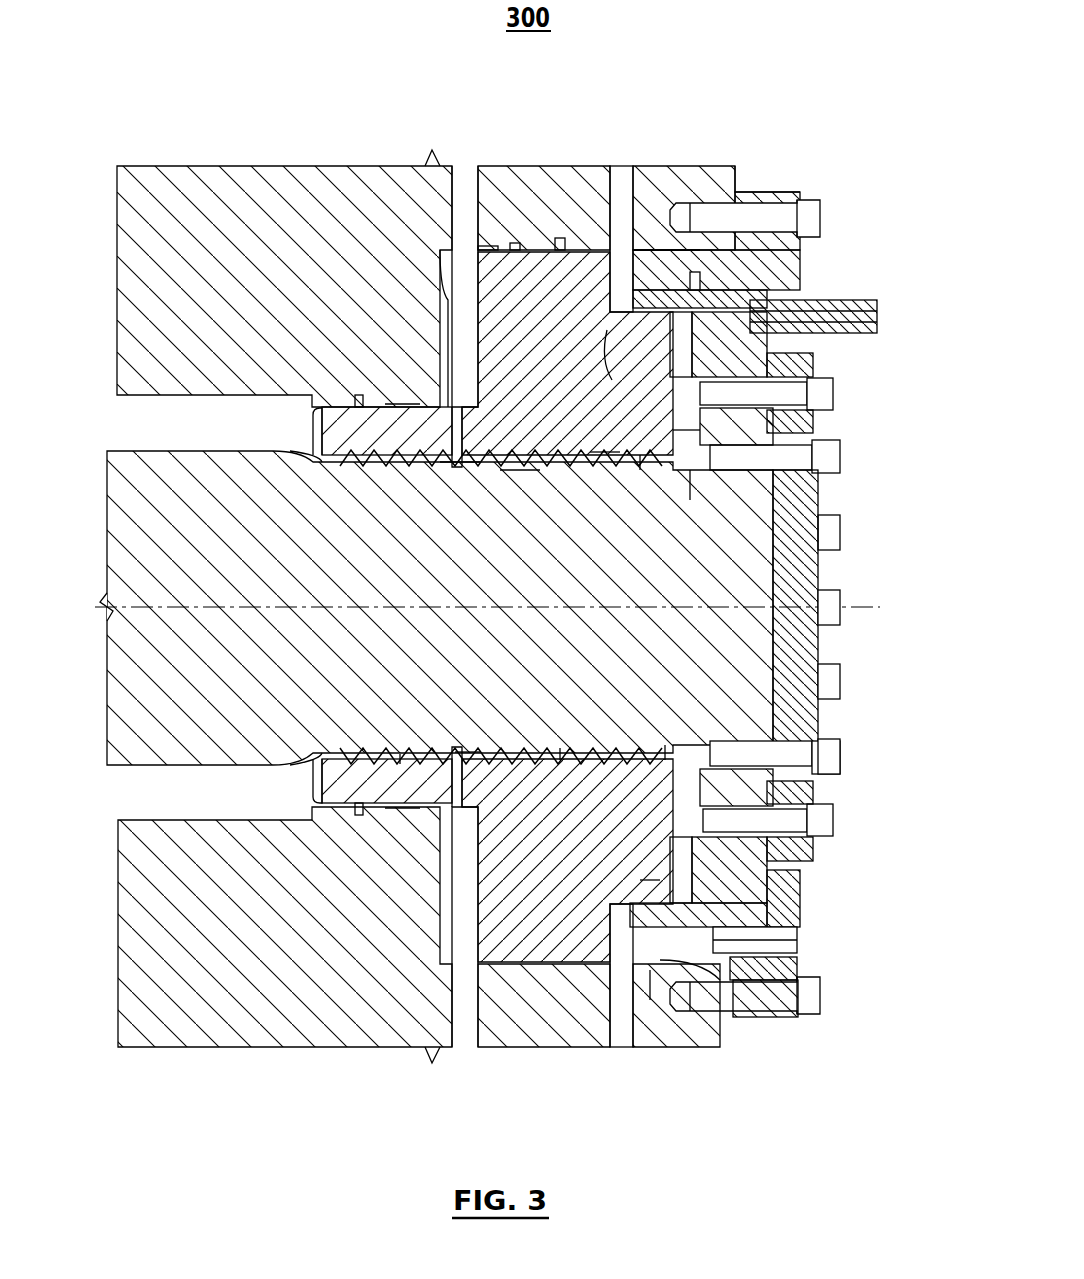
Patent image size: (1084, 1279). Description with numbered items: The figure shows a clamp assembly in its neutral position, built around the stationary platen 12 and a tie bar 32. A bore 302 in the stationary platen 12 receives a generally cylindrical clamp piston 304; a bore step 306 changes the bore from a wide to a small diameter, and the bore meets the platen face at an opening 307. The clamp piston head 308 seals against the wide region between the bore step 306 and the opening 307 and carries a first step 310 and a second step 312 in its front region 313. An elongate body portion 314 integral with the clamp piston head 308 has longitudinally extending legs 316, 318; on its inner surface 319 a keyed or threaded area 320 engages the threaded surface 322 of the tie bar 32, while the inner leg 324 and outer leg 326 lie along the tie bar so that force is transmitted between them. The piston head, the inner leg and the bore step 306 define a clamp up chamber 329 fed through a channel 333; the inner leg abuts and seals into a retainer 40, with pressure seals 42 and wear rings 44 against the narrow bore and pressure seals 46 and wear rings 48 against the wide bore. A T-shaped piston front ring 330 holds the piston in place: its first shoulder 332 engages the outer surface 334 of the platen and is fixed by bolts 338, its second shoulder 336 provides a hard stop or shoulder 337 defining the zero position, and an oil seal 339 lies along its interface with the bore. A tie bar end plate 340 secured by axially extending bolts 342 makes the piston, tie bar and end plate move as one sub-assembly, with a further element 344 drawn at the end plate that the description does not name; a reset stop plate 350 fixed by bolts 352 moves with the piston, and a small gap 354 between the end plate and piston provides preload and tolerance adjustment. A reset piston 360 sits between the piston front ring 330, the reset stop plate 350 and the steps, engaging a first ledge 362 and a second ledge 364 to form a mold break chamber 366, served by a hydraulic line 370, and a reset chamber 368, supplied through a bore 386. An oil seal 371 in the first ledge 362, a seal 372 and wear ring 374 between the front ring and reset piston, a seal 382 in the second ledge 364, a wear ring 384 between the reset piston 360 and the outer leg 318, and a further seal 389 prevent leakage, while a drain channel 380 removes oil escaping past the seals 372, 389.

The stationary platen 12 is at (290, 200).
The tie bar 32 is at (100, 548).
The retainer 40 is at (300, 460).
The pressure seals 42 is at (318, 408).
The wear rings 44 is at (415, 462).
The pressure seals 46 is at (515, 243).
The wear rings 48 is at (482, 246).
The bore 302 is at (320, 805).
The clamp piston 304 is at (470, 950).
The bore step 306 is at (432, 250).
The opening 307 is at (740, 1017).
The clamp piston head 308 is at (560, 965).
The first step 310 is at (560, 236).
The second step 312 is at (745, 215).
The front region 313 is at (645, 878).
The elongate body portion 314 is at (520, 470).
The inner leg 316 is at (460, 466).
The outer leg 318 is at (700, 500).
The inner surface 319 is at (405, 750).
The keyed (or threaded) area 320 is at (530, 750).
The keyed (or threaded) surface 322 is at (570, 750).
The inner leg 324 is at (330, 755).
The outer leg 326 is at (720, 770).
The clamp up chamber 329 is at (465, 760).
The piston front ring 330 is at (790, 265).
The first shoulder 332 is at (775, 215).
The channel 333 is at (465, 180).
The outer surface 334 is at (740, 200).
The second shoulder 336 is at (790, 305).
The hard stop (shoulder) 337 is at (790, 298).
The bolts 338 is at (815, 218).
The oil seal 339 is at (797, 968).
The tie bar end plate 340 is at (808, 572).
The bolts 342 is at (830, 532).
The bolt head 344 is at (830, 460).
The reset stop plate 350 is at (828, 390).
The bolts 352 is at (825, 455).
The gap 354 is at (830, 822).
The reset piston 360 is at (640, 460).
The first ledge 362 is at (680, 860).
The second ledge 364 is at (600, 455).
The mold break chamber 366 is at (622, 965).
The reset chamber 368 is at (680, 375).
The hydraulic line 370 is at (620, 190).
The oil seal 371 is at (607, 357).
The seal 372 is at (690, 1000).
The wear ring 374 is at (655, 250).
The drain channel 380 is at (795, 940).
The seal 382 is at (780, 340).
The wear ring 384 is at (705, 470).
The bore 386 is at (700, 432).
The seal 389 is at (678, 1050).